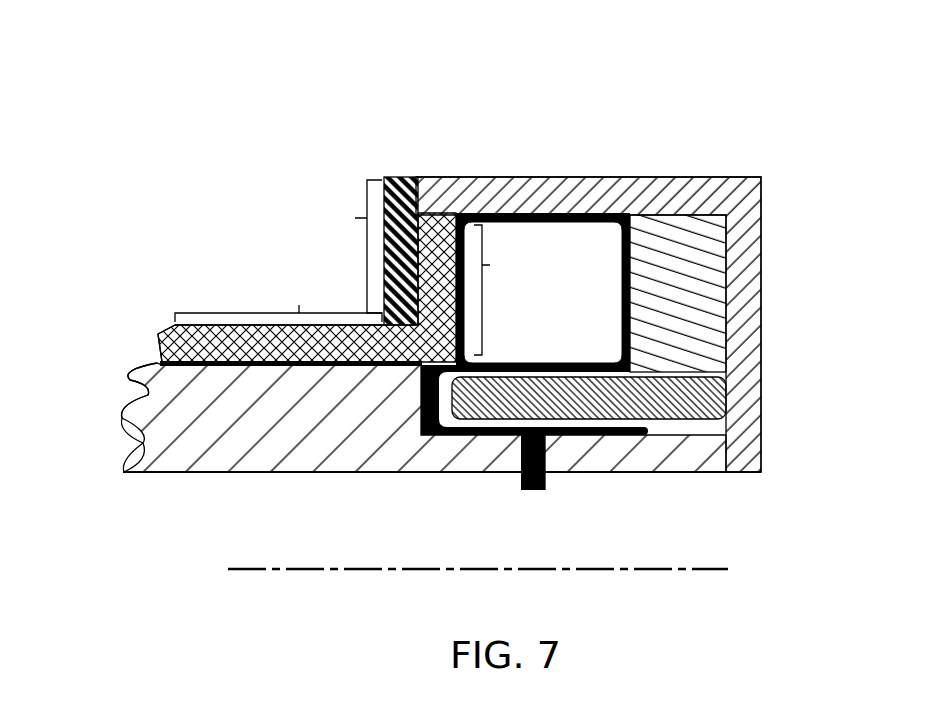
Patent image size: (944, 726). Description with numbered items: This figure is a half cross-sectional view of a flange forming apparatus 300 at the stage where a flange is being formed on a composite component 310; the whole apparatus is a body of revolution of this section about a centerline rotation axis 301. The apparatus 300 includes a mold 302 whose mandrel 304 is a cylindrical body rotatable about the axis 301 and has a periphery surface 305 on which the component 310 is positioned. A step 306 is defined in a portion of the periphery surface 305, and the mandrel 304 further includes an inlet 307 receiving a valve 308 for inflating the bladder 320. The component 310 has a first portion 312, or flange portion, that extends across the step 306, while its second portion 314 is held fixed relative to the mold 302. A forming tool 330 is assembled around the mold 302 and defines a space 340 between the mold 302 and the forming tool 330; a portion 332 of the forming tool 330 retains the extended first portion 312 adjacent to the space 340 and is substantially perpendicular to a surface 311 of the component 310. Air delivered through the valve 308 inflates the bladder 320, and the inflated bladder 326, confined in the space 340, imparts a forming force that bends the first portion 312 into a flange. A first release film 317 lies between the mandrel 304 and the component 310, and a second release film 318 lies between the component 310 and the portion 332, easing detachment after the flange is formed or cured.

The flange forming apparatus 300 is at (168, 110).
The axis 301 is at (708, 569).
The mold 302 is at (268, 481).
The mandrel 304 is at (323, 463).
The periphery surface 305 is at (167, 349).
The step 306 is at (705, 428).
The inlet 307 is at (512, 484).
The valve 308 is at (537, 489).
The composite component 310 is at (165, 330).
The surface 311 is at (197, 325).
The first portion 312 is at (543, 292).
The second portion 314 is at (278, 302).
The first release film 317 is at (187, 370).
The second release film 318 is at (422, 206).
The bladder 320 is at (422, 433).
The inflated bladder 326 is at (622, 295).
The forming tool 330 is at (739, 172).
The portion of the forming tool 332 is at (347, 246).
The space 340 is at (612, 258).